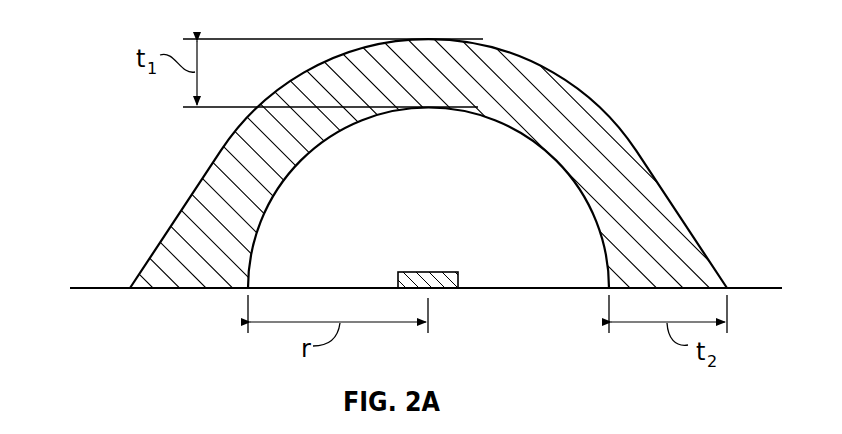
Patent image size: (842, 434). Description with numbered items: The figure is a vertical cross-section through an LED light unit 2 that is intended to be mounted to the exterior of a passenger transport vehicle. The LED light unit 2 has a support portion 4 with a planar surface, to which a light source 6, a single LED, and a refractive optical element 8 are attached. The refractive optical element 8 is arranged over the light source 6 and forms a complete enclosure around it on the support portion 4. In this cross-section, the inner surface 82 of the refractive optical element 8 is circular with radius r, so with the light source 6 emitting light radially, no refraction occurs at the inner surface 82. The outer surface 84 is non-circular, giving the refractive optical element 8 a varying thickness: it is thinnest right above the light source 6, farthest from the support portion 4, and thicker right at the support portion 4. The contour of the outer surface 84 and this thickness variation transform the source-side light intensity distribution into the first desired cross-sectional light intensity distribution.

The LED light unit 2 is at (421, 144).
The support portion 4 is at (762, 288).
The light source 6 is at (413, 272).
The refractive optical element 8 is at (421, 163).
The inner surface 82 is at (537, 144).
The outer surface 84 is at (591, 97).